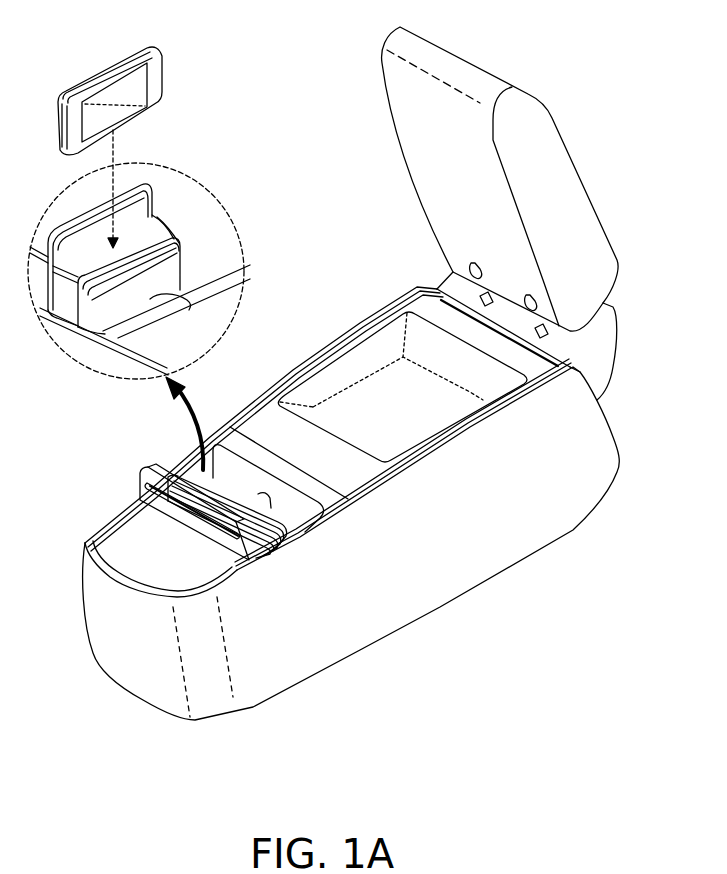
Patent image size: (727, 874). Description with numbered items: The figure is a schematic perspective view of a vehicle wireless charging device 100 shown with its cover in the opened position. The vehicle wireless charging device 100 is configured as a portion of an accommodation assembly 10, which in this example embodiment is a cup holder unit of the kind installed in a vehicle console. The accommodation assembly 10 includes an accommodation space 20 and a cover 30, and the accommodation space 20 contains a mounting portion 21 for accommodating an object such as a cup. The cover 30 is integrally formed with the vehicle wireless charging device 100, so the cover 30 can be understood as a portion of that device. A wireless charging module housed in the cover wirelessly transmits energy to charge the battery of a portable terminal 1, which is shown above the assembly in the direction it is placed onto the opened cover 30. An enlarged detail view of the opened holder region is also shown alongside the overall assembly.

The portable terminal 1 is at (160, 78).
The accommodation assembly 10 is at (300, 147).
The accommodation space 20 is at (198, 277).
The mounting portion 21 is at (185, 305).
The cover 30 is at (170, 197).
The vehicle wireless charging device 100 is at (133, 486).